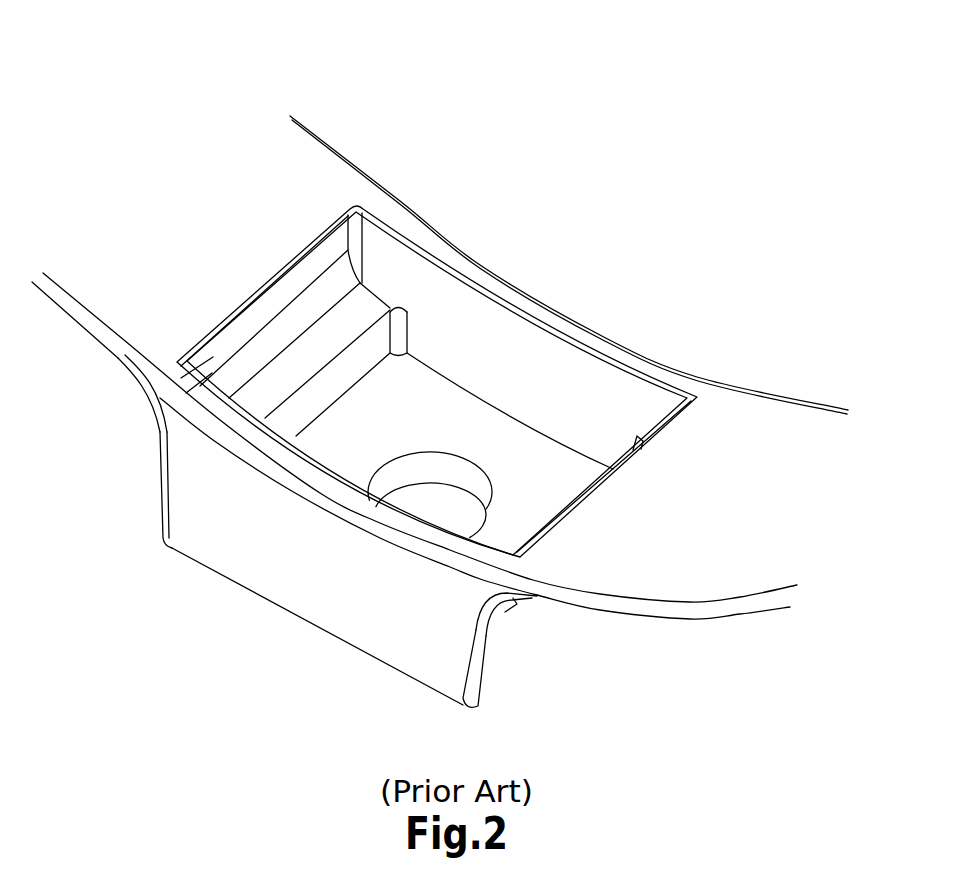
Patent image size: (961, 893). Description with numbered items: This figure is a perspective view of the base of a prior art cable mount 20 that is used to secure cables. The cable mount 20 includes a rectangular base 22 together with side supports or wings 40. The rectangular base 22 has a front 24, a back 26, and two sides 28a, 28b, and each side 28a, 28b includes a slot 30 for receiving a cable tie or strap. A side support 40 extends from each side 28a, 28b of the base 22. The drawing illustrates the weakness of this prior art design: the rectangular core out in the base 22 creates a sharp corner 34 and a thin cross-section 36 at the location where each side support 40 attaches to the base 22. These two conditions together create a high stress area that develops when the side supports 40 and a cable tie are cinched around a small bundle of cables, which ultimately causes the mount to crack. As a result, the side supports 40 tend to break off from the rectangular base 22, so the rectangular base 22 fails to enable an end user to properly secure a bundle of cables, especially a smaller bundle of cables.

The cable mount 20 is at (513, 228).
The rectangular base 22 is at (163, 530).
The front 24 is at (317, 627).
The back 26 is at (510, 388).
The side 28a is at (158, 427).
The side 28b is at (543, 623).
The slot 30 is at (137, 399).
The sharp corner 34 is at (352, 237).
The thin cross-section 36 is at (358, 193).
The side support 40 is at (250, 168).